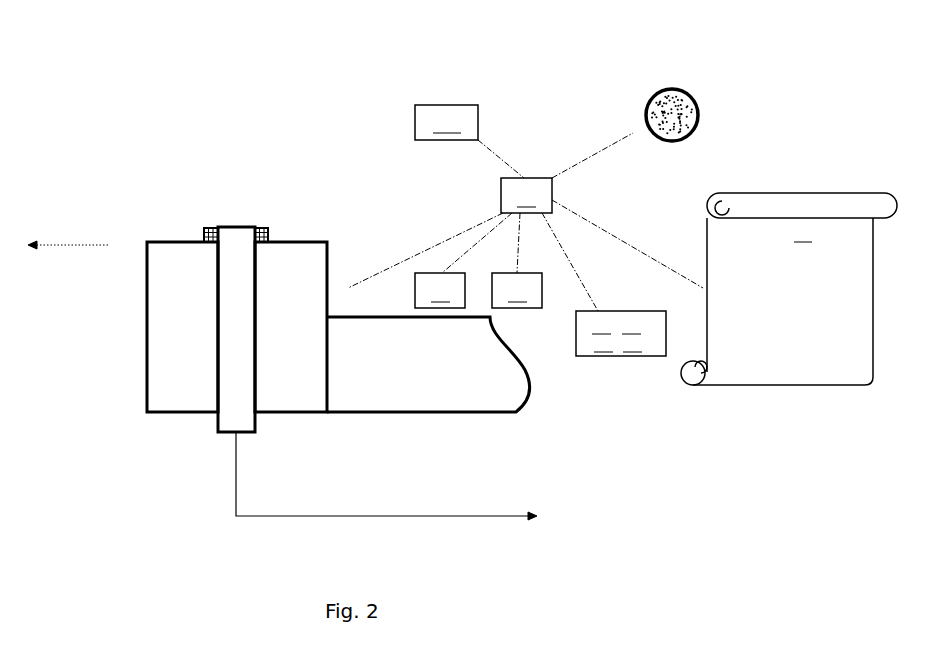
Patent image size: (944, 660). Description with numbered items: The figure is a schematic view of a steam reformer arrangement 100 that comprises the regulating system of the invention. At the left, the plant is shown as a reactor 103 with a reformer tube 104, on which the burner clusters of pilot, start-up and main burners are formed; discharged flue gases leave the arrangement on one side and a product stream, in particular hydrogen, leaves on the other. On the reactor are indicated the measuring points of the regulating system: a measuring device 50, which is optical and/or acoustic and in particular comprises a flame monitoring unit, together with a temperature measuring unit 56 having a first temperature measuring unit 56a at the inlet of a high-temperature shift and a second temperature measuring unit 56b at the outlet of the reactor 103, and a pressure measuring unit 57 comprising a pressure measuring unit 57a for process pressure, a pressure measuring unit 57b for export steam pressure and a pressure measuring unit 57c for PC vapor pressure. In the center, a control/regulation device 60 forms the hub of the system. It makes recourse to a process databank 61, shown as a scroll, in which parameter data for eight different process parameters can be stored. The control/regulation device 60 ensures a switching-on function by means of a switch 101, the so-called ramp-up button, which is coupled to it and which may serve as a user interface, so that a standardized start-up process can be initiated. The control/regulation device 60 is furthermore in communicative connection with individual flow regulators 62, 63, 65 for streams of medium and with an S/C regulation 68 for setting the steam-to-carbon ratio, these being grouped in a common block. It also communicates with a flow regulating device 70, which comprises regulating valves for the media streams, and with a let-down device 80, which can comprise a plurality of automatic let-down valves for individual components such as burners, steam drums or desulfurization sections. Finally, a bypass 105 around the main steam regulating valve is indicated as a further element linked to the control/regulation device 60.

The steam reformer arrangement 100 is at (374, 43).
The switch 101 is at (647, 110).
The reactor 103 is at (181, 233).
The reformer tube 104 is at (255, 433).
The bypass around the main steam regulating valve 105 is at (446, 122).
The control/regulation device 60 is at (526, 195).
The process databank 61 is at (789, 289).
The flow regulator 62 is at (621, 333).
The flow regulator 63 is at (621, 333).
The flow regulator 65 is at (621, 333).
The S/C regulation 68 is at (621, 333).
The flow regulating device 70 is at (517, 290).
The let-down device 80 is at (440, 290).
The measuring device 50 is at (253, 206).
The temperature measuring unit 56 is at (327, 216).
The first temperature measuring unit 56a is at (327, 216).
The second temperature measuring unit 56b is at (264, 228).
The pressure measuring unit 57 is at (182, 206).
The pressure measuring unit for process pressure 57a is at (182, 206).
The pressure measuring unit for export steam pressure 57b is at (182, 206).
The pressure measuring unit for PC vapor pressure 57c is at (206, 228).